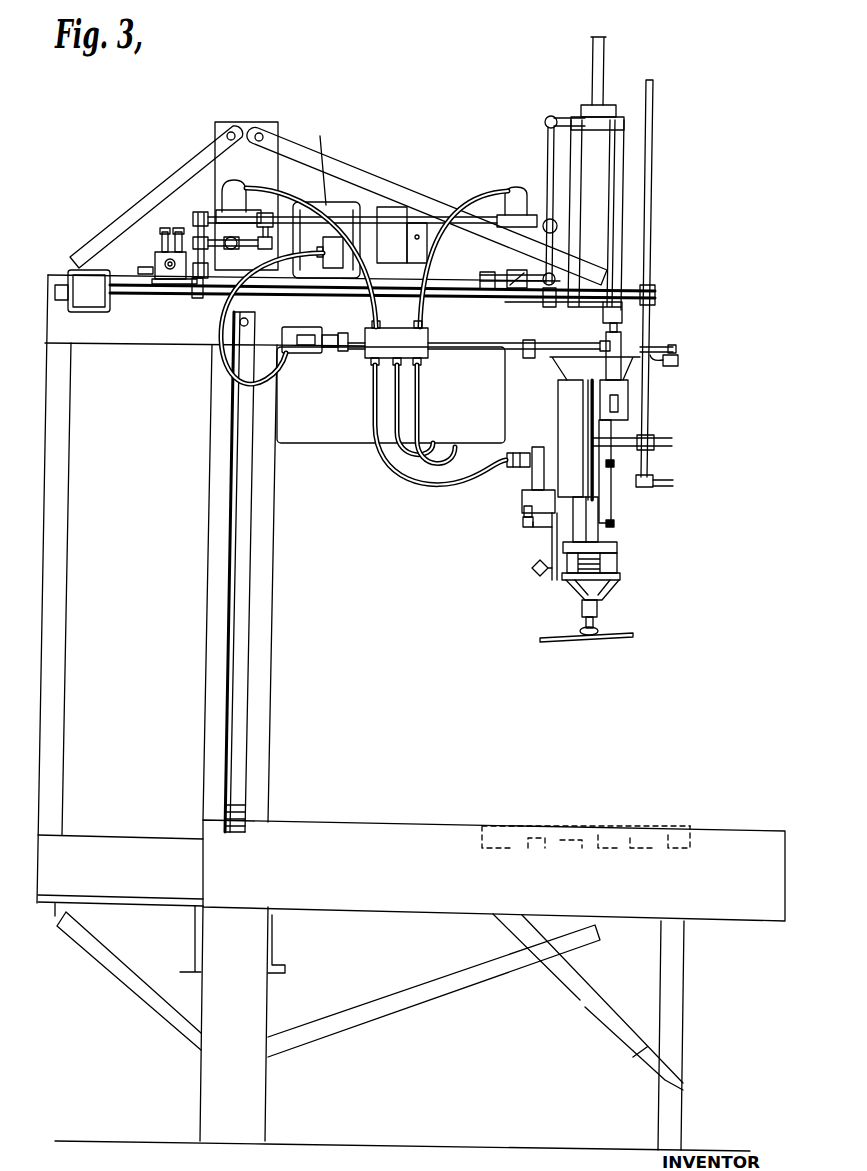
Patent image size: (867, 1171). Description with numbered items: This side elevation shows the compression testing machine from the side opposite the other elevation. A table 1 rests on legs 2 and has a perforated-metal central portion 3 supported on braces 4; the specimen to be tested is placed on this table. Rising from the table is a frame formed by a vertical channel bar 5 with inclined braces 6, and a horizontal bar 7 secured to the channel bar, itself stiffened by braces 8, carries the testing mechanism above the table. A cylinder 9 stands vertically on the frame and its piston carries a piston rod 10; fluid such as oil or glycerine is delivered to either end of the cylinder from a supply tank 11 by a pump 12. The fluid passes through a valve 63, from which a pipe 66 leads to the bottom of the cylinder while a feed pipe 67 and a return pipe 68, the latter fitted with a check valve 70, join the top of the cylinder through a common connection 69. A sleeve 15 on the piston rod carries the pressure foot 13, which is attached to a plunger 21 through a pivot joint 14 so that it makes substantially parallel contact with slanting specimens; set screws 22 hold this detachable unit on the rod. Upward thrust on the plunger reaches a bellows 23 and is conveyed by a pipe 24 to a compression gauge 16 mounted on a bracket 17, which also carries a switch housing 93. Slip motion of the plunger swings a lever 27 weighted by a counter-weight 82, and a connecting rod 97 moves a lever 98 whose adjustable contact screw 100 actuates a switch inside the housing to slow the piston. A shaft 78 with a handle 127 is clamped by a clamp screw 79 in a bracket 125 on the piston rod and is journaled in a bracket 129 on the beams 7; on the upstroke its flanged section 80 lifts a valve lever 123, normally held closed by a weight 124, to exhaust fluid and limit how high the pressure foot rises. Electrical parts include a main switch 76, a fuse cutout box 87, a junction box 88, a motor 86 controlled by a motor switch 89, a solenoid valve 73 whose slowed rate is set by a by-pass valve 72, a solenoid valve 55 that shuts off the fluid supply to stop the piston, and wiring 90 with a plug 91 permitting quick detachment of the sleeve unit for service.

The table 1 is at (368, 821).
The legs 2 is at (200, 1093).
The central portion 3 is at (531, 825).
The braces 4 is at (658, 826).
The vertical channel bar 5 is at (207, 650).
The inclined braces 6 is at (228, 726).
The bar 7 is at (146, 334).
The braces 8 is at (118, 218).
The cylinder 9 is at (622, 200).
The piston rod 10 is at (593, 70).
The supply tank 11 is at (316, 428).
The pump 12 is at (398, 211).
The pressure foot 13 is at (543, 639).
The pivot joint 14 is at (597, 631).
The sleeve 15 is at (600, 504).
The compression gauge 16 is at (577, 488).
The bracket 17 is at (558, 421).
The plunger 21 is at (582, 610).
The set screws 22 is at (617, 525).
The bellows 23 is at (618, 565).
The pipe 24 is at (617, 546).
The lever 27 is at (562, 589).
The solenoid valve 55 is at (517, 200).
The valve 63 is at (157, 253).
The pipe 66 is at (150, 272).
The feed pipe 67 is at (466, 205).
The return pipe 68 is at (457, 284).
The common connection 69 is at (571, 140).
The check valve 70 is at (518, 289).
The by-pass valve 72 is at (212, 250).
The solenoid valve 73 is at (238, 188).
The switch 76 is at (628, 413).
The shaft 78 is at (652, 259).
The clamp screw 79 is at (668, 447).
The flanged section 80 is at (652, 356).
The counter-weight 82 is at (533, 571).
The motor 86 is at (320, 158).
The fuse cutout box 87 is at (80, 290).
The junction box 88 is at (425, 350).
The motor switch 89 is at (304, 352).
The wiring portion 90 is at (417, 487).
The plug 91 is at (522, 468).
The housing 93 is at (524, 512).
The connecting rod 97 is at (553, 560).
The lever 98 is at (510, 544).
The adjustable contact screw 100 is at (528, 527).
The valve lever 123 is at (668, 348).
The weight 124 is at (679, 359).
The bracket 125 is at (652, 441).
The handle 127 is at (673, 487).
The bracket 129 is at (655, 294).